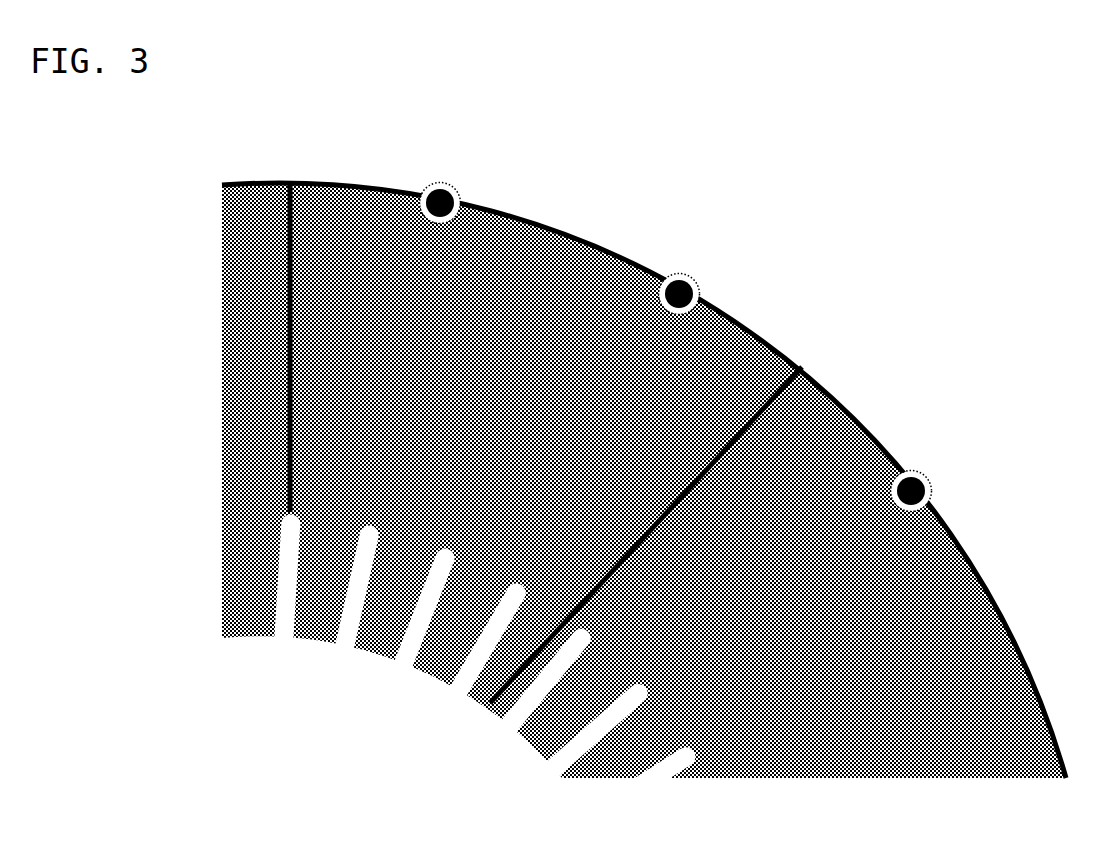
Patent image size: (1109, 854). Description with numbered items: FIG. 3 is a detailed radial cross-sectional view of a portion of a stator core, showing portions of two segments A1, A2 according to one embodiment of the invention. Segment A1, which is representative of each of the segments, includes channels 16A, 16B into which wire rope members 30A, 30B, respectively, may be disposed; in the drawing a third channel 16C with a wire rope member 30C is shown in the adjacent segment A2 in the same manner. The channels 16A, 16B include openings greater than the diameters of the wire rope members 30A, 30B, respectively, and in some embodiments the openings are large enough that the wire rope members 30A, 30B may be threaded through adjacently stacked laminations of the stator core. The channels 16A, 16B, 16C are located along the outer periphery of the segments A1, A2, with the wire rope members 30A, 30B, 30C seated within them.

The wire rope member 30A is at (450, 192).
The wire rope member 30B is at (695, 285).
The wire rope member 30C is at (928, 487).
The channel 16A is at (432, 222).
The channel 16B is at (672, 312).
The channel 16C is at (888, 502).
The segment A1 is at (515, 403).
The segment A2 is at (822, 655).